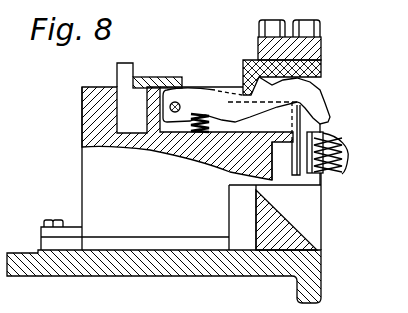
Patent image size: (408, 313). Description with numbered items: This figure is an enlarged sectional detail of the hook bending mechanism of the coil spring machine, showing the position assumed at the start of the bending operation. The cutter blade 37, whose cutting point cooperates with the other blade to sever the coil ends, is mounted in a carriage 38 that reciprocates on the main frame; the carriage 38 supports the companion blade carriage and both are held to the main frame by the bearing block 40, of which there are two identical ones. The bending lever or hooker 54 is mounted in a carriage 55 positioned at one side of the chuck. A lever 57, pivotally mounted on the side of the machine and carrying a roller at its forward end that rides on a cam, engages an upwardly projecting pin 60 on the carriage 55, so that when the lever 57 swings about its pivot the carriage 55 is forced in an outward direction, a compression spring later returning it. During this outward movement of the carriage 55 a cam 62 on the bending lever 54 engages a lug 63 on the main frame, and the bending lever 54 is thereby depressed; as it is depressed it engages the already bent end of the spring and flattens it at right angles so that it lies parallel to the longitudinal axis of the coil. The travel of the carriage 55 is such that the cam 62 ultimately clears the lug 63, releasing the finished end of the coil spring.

The blade 37 is at (341, 168).
The carriage 38 is at (302, 217).
The bearing block 40 is at (320, 43).
The bending lever 54 is at (316, 95).
The carriage 55 is at (164, 195).
The lever 57 is at (144, 77).
The pin 60 is at (123, 98).
The cam 62 is at (265, 86).
The lug 63 is at (246, 80).